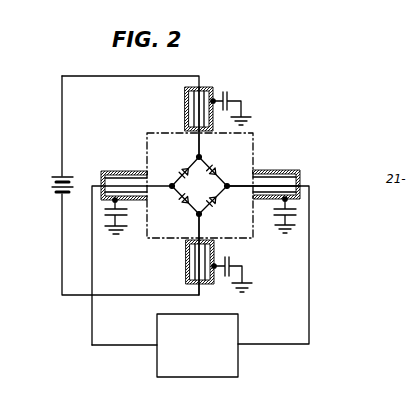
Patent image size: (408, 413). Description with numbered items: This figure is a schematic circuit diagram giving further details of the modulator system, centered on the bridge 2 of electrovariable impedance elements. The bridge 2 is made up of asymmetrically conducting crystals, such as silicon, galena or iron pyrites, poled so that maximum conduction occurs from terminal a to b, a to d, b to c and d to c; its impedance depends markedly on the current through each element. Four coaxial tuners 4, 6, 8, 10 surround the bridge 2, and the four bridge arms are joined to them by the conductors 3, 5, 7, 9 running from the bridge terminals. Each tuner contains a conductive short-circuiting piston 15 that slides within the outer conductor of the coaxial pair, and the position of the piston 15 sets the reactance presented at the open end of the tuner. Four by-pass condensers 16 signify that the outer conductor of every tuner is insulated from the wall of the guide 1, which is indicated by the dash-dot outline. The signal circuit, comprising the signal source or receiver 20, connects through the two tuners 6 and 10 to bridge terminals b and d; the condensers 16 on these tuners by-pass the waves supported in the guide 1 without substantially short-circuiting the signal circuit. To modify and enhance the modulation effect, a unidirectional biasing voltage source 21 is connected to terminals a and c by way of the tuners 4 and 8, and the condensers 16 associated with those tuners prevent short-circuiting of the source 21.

The guide 1 is at (252, 148).
The bridge 2 is at (200, 186).
The top bridge conductor 3 is at (200, 148).
The coaxial tuner 4 is at (184, 98).
The left bridge conductor 5 is at (165, 186).
The coaxial tuner 6 is at (133, 172).
The bottom bridge conductor 7 is at (203, 236).
The coaxial tuner 8 is at (185, 258).
The right bridge conductor 9 is at (244, 186).
The coaxial tuner 10 is at (260, 170).
The short-circuiting piston 15 is at (208, 87).
The by-pass condenser 16 is at (229, 95).
The signal source or receiver 20 is at (244, 368).
The unidirectional biasing voltage source 21 is at (51, 178).